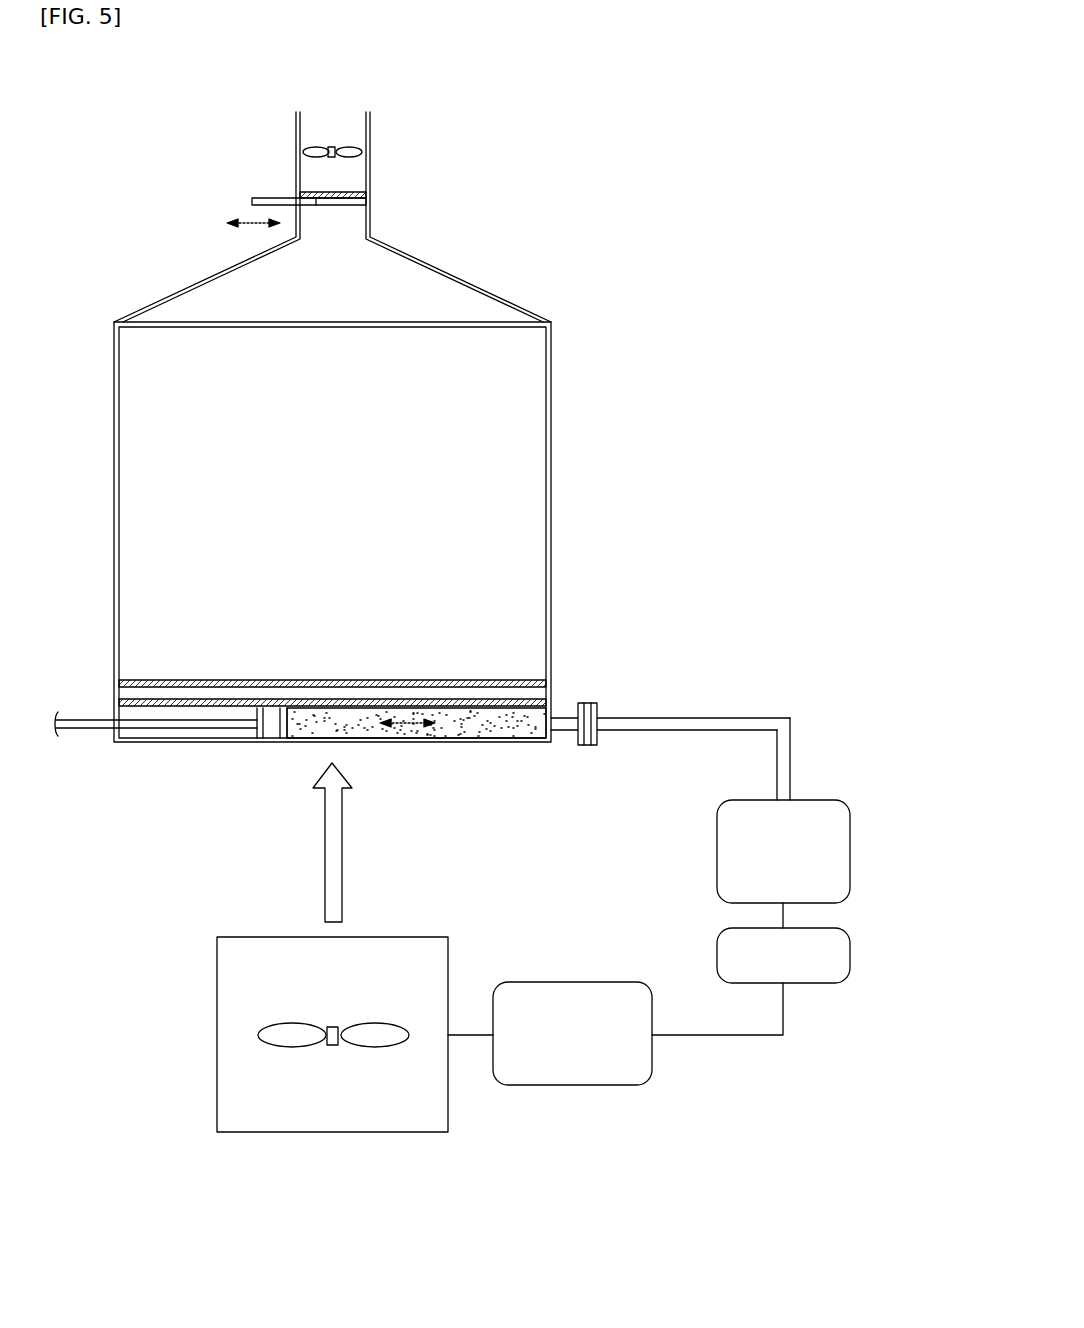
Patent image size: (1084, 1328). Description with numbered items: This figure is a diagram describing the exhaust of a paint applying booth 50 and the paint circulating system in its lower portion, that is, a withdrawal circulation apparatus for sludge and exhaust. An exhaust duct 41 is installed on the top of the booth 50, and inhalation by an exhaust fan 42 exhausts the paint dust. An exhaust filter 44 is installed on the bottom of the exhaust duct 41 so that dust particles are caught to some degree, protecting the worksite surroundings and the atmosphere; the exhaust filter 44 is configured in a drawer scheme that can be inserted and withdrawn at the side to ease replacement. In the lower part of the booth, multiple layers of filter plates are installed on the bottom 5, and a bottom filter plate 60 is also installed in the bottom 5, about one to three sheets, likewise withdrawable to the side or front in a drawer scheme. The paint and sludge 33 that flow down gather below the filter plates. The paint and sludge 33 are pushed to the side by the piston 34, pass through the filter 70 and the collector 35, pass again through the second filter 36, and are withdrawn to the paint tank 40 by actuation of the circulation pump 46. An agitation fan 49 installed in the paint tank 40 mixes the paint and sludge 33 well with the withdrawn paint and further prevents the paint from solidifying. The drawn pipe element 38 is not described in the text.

The paint applying booth 50 is at (660, 360).
The exhaust duct 41 is at (296, 128).
The exhaust fan 42 is at (365, 150).
The exhaust filter 44 is at (296, 194).
The bottom 5 is at (443, 652).
The bottom filter plate 60 is at (556, 698).
The paint and sludge 33 is at (473, 733).
The piston 34 is at (270, 731).
The supply pipe 38 is at (85, 729).
The filter 70 is at (595, 746).
The collector 35 is at (850, 850).
The circulation pump 46 is at (850, 955).
The second filter 36 is at (600, 1085).
The paint tank 40 is at (253, 1133).
The agitation fan 49 is at (387, 1038).